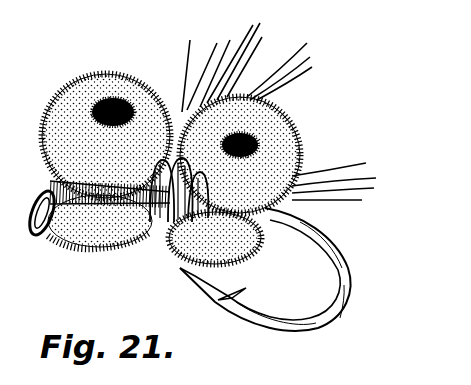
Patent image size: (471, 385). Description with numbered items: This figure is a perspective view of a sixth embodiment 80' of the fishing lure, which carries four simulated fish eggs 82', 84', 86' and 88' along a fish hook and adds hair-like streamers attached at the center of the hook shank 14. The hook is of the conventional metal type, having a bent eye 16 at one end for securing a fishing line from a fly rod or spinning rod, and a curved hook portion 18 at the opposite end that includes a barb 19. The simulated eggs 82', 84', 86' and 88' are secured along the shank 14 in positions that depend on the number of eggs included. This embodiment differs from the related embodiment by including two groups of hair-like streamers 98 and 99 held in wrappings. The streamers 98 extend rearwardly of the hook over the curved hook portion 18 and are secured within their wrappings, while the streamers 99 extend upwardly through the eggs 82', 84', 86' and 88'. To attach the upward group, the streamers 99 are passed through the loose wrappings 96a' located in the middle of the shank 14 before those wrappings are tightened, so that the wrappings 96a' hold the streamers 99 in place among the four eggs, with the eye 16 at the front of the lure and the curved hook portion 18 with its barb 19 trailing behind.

The fishing lure embodiment 80' is at (171, 154).
The simulated fish egg 82' is at (106, 136).
The simulated fish egg 86' is at (240, 155).
The simulated fish egg 84' is at (109, 215).
The simulated fish egg 88' is at (215, 238).
The eye 16 is at (39, 240).
The wrappings 96a' is at (154, 225).
The hair-like streamers 99 is at (244, 42).
The hair-like streamers 98 is at (340, 184).
The shank 14 is at (275, 272).
The curved hook portion 18 is at (318, 315).
The barb 19 is at (243, 289).